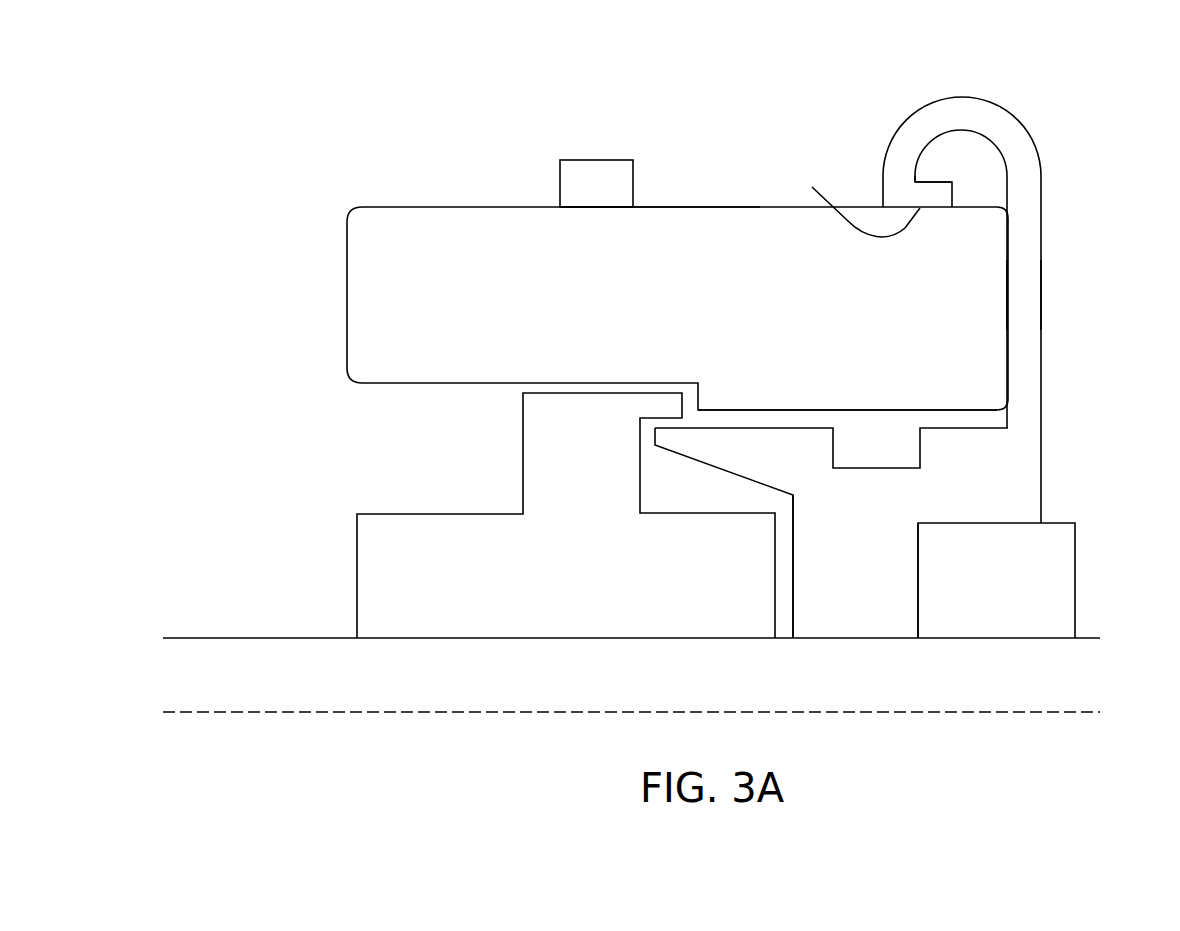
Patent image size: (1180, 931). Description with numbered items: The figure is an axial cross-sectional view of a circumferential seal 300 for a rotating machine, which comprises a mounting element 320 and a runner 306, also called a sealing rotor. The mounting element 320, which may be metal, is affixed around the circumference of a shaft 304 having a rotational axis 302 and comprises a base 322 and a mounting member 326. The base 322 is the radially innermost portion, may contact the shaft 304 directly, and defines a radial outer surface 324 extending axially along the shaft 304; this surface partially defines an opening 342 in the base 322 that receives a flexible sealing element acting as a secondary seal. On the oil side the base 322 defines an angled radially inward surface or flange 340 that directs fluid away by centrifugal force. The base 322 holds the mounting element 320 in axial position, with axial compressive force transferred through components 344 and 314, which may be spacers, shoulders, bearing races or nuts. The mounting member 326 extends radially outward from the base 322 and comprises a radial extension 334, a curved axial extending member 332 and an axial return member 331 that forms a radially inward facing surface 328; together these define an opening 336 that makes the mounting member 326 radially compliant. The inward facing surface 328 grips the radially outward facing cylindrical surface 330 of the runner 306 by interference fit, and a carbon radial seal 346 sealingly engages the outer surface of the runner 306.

The circumferential seal 300 is at (297, 122).
The rotational axis 302 is at (845, 712).
The shaft 304 is at (575, 681).
The runner 306 is at (607, 305).
The component 314 is at (973, 596).
The mounting element 320 is at (1078, 423).
The base 322 is at (842, 554).
The radial outer surface 324 is at (773, 430).
The mounting member 326 is at (1042, 196).
The radially inward facing surface 328 is at (846, 200).
The radially outward facing cylindrical surface 330 is at (653, 208).
The axial return member 331 is at (940, 193).
The axial extending member 332 is at (957, 125).
The radial extension 334 is at (1031, 280).
The opening 336 is at (950, 174).
The radially inward surface or flange 340 is at (708, 465).
The opening 342 is at (857, 453).
The component 344 is at (493, 598).
The radial seal 346 is at (574, 199).